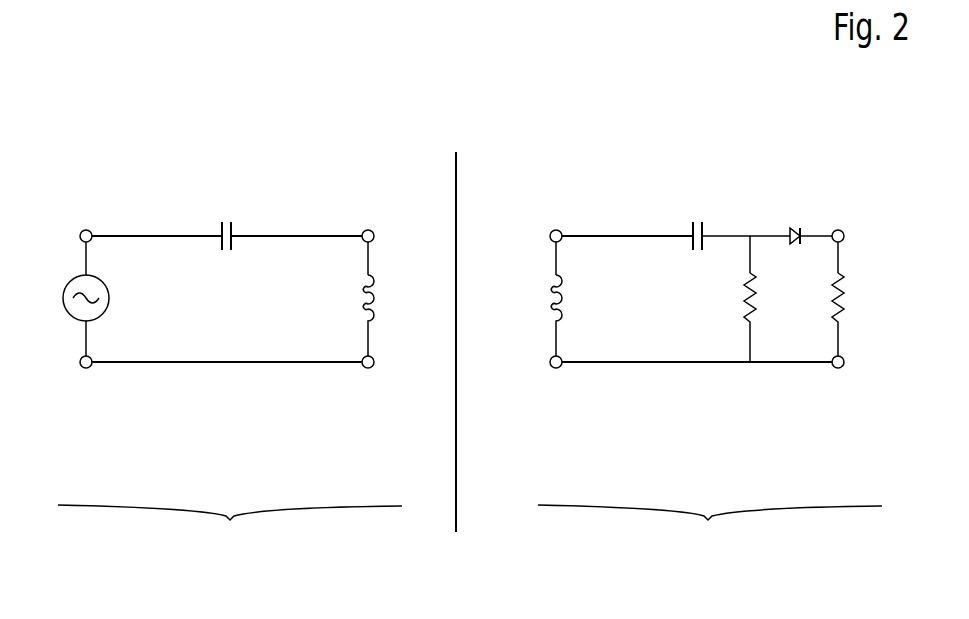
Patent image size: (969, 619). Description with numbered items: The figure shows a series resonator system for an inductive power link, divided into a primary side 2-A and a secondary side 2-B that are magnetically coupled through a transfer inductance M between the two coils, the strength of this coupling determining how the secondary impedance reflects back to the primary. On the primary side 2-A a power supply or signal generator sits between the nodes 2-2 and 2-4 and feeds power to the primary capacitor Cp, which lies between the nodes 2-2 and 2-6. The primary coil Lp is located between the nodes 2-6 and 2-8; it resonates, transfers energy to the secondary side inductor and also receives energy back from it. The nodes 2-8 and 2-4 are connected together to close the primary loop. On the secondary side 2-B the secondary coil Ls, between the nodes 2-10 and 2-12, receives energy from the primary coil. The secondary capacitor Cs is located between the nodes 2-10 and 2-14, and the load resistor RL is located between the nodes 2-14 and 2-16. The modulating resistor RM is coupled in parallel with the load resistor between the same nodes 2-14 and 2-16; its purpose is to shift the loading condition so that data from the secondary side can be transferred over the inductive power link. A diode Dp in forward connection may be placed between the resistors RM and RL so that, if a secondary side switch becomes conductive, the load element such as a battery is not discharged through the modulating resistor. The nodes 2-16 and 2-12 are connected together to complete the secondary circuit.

The primary side 2-A is at (233, 380).
The secondary side 2-B is at (703, 377).
The node 2-2 is at (83, 222).
The node 2-4 is at (82, 380).
The node 2-6 is at (369, 221).
The node 2-8 is at (368, 377).
The node 2-10 is at (553, 221).
The node 2-12 is at (552, 377).
The node 2-14 is at (838, 221).
The node 2-16 is at (838, 377).
The transfer inductance M is at (454, 324).
The primary capacitor Cp is at (217, 213).
The primary coil Lp is at (393, 299).
The secondary capacitor Cs is at (687, 213).
The secondary coil Ls is at (539, 299).
The diode Dp is at (775, 220).
The modulating resistor RM is at (728, 299).
The load resistor RL is at (861, 299).